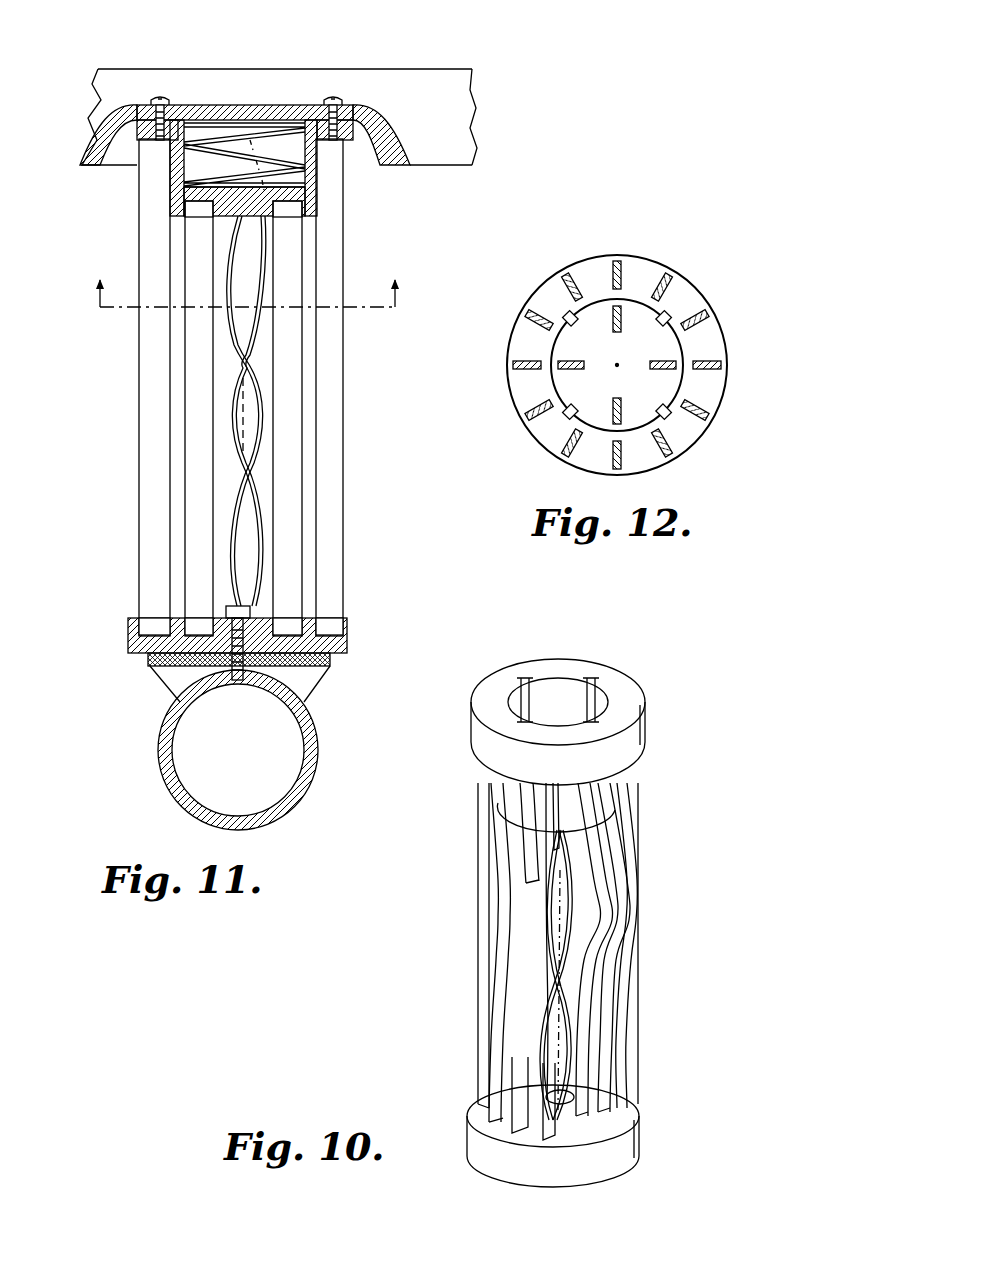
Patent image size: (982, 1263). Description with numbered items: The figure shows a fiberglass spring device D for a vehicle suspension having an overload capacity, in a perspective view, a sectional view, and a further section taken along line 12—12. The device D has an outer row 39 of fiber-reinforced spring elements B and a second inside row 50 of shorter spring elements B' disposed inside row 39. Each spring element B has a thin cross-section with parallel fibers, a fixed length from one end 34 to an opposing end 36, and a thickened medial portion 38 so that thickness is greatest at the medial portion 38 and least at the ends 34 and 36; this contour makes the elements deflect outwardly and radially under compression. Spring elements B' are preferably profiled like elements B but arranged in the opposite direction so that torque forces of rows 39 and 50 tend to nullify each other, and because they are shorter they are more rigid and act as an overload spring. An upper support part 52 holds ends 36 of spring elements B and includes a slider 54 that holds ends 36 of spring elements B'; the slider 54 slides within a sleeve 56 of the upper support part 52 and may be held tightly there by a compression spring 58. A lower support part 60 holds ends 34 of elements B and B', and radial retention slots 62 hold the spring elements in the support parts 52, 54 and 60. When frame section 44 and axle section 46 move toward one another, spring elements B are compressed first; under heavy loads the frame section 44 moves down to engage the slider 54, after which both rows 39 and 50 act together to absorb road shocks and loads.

In FIG. 11, the section line 12— 12 is at (249, 277).
In FIG. 11, the end 34 is at (335, 618).
In FIG. 11, the opposing end 36 is at (337, 160).
In FIG. 10, the medial portion 38 is at (612, 945).
In FIG. 11, the row of spring elements 39 is at (356, 574).
In FIG. 12, the row of spring elements 39 is at (636, 266).
In FIG. 10, the row of spring elements 39 is at (470, 1064).
In FIG. 11, the frame section 44 is at (472, 69).
In FIG. 11, the axle section 46 is at (316, 772).
In FIG. 11, the second inside row 50 is at (218, 596).
In FIG. 12, the second inside row 50 is at (570, 378).
In FIG. 10, the second inside row 50 is at (562, 1122).
In FIG. 11, the upper support part 52 is at (177, 118).
In FIG. 12, the upper support part 52 is at (695, 450).
In FIG. 10, the upper support part 52 is at (645, 697).
In FIG. 11, the slider 54 is at (176, 205).
In FIG. 12, the slider 54 is at (665, 388).
In FIG. 10, the slider 54 is at (605, 800).
In FIG. 10, the sleeve 56 is at (576, 690).
In FIG. 11, the compression spring 58 is at (287, 123).
In FIG. 11, the lower support part 60 is at (348, 648).
In FIG. 10, the lower support part 60 is at (642, 1134).
In FIG. 11, the radial retention slots 62 is at (140, 160).
In FIG. 12, the radial retention slots 62 is at (576, 284).
In FIG. 11, the spring element B is at (241, 387).
In FIG. 12, the spring element B is at (622, 357).
In FIG. 10, the spring element B is at (588, 945).
In FIG. 11, the spring element B' is at (248, 418).
In FIG. 12, the spring element B' is at (667, 365).
In FIG. 10, the spring element B' is at (491, 1041).
In FIG. 11, the device D is at (400, 232).
In FIG. 10, the device D is at (468, 856).